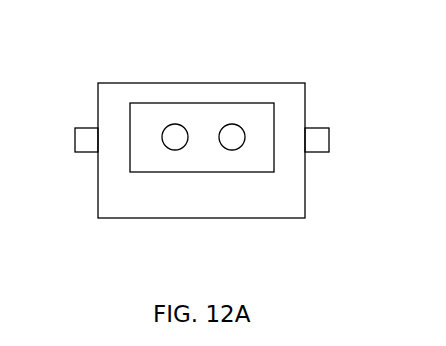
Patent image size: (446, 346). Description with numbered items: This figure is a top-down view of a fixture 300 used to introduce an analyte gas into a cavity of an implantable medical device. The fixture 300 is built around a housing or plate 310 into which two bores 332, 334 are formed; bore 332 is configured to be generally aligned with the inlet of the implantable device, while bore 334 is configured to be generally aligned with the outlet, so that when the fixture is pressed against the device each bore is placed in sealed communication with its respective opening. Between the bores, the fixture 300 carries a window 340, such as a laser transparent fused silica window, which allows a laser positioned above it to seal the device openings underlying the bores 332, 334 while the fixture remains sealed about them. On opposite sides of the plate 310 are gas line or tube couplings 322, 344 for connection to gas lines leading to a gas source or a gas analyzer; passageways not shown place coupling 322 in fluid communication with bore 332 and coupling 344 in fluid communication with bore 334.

The fixture 300 is at (148, 59).
The housing or plate 310 is at (212, 208).
The gas line or tube coupling 322 is at (90, 140).
The bore 332 is at (175, 138).
The bore 334 is at (231, 137).
The window 340 is at (227, 99).
The gas line or tube coupling 344 is at (323, 142).